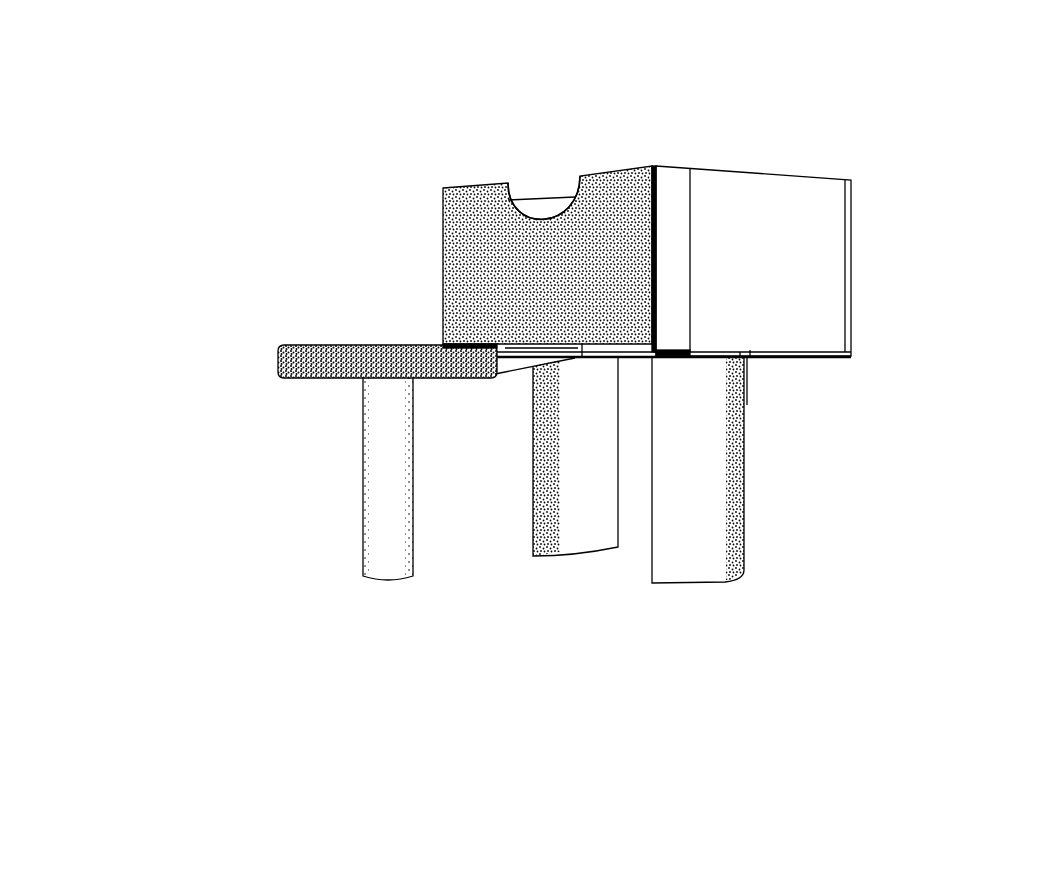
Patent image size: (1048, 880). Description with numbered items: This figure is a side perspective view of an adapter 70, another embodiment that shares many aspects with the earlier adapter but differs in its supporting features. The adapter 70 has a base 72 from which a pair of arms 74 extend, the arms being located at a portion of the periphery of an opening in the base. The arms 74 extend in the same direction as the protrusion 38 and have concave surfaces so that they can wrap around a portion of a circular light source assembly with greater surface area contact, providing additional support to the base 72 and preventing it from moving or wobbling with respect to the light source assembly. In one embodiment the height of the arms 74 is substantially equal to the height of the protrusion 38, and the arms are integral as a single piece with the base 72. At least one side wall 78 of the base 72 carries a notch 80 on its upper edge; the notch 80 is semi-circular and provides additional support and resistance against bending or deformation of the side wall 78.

The adapter 70 is at (328, 225).
The base 72 is at (878, 282).
The side wall 78 is at (617, 213).
The notch 80 is at (578, 188).
The protrusion 38 is at (382, 560).
The arms 74 is at (562, 539).